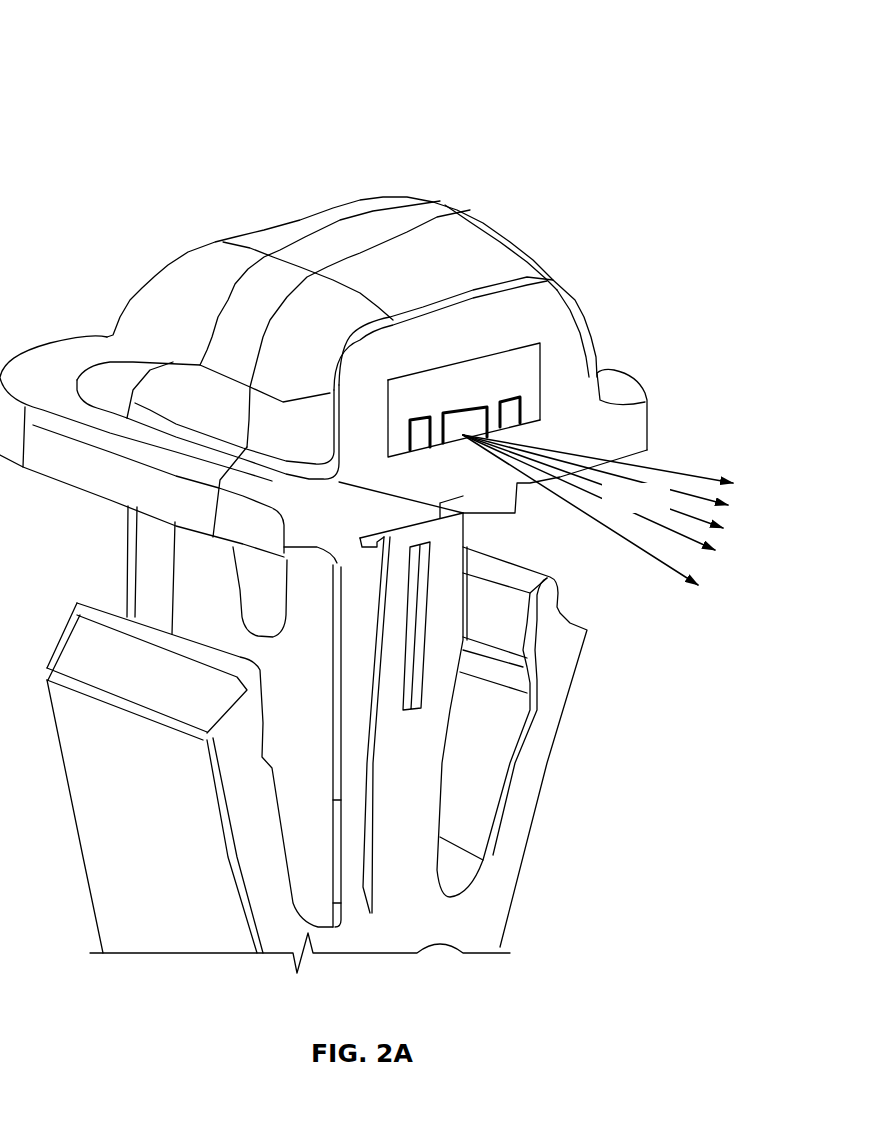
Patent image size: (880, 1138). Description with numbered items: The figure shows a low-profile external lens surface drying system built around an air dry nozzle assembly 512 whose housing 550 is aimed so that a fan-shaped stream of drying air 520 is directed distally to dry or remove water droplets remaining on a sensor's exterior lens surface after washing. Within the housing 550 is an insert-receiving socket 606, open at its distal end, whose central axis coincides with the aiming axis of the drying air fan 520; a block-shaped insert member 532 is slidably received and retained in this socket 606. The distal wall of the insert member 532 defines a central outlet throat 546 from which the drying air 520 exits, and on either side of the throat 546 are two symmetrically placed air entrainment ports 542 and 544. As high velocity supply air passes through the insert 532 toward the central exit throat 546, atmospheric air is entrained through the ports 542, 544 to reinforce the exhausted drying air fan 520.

The air dry nozzle assembly 512 is at (199, 72).
The housing 550 is at (392, 290).
The insert-receiving socket 606 is at (425, 368).
The insert member 532 is at (462, 388).
The air entrainment port 542 is at (413, 430).
The outlet throat 546 is at (460, 427).
The air entrainment port 544 is at (513, 410).
The drying air fan 520 is at (598, 510).